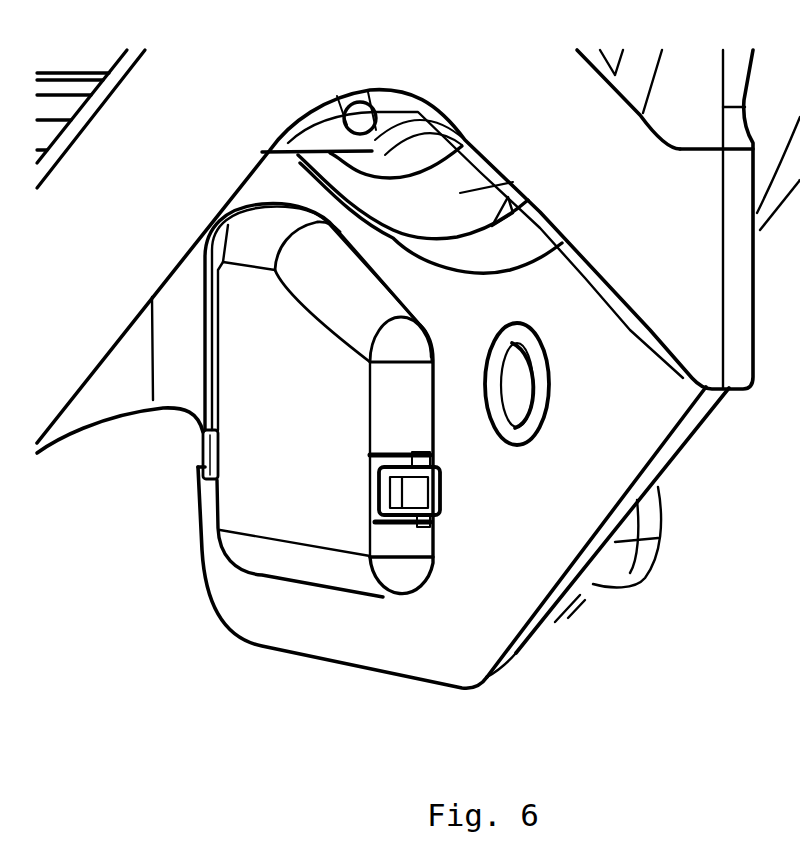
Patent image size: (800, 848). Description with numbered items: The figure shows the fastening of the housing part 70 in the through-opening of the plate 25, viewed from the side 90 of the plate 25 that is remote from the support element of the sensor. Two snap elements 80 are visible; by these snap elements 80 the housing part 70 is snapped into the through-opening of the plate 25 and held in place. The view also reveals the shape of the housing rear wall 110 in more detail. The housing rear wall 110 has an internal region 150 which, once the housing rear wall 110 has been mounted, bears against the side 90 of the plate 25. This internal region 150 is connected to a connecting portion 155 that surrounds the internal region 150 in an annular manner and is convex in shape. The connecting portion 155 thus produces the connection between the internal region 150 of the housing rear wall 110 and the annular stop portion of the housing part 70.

The plate 25 is at (516, 653).
The housing part 70 is at (440, 430).
The snap elements 80 is at (197, 462).
The side of the plate 90 is at (247, 612).
The housing rear wall 110 is at (295, 497).
The internal region 150 is at (270, 482).
The connecting portion 155 is at (363, 315).